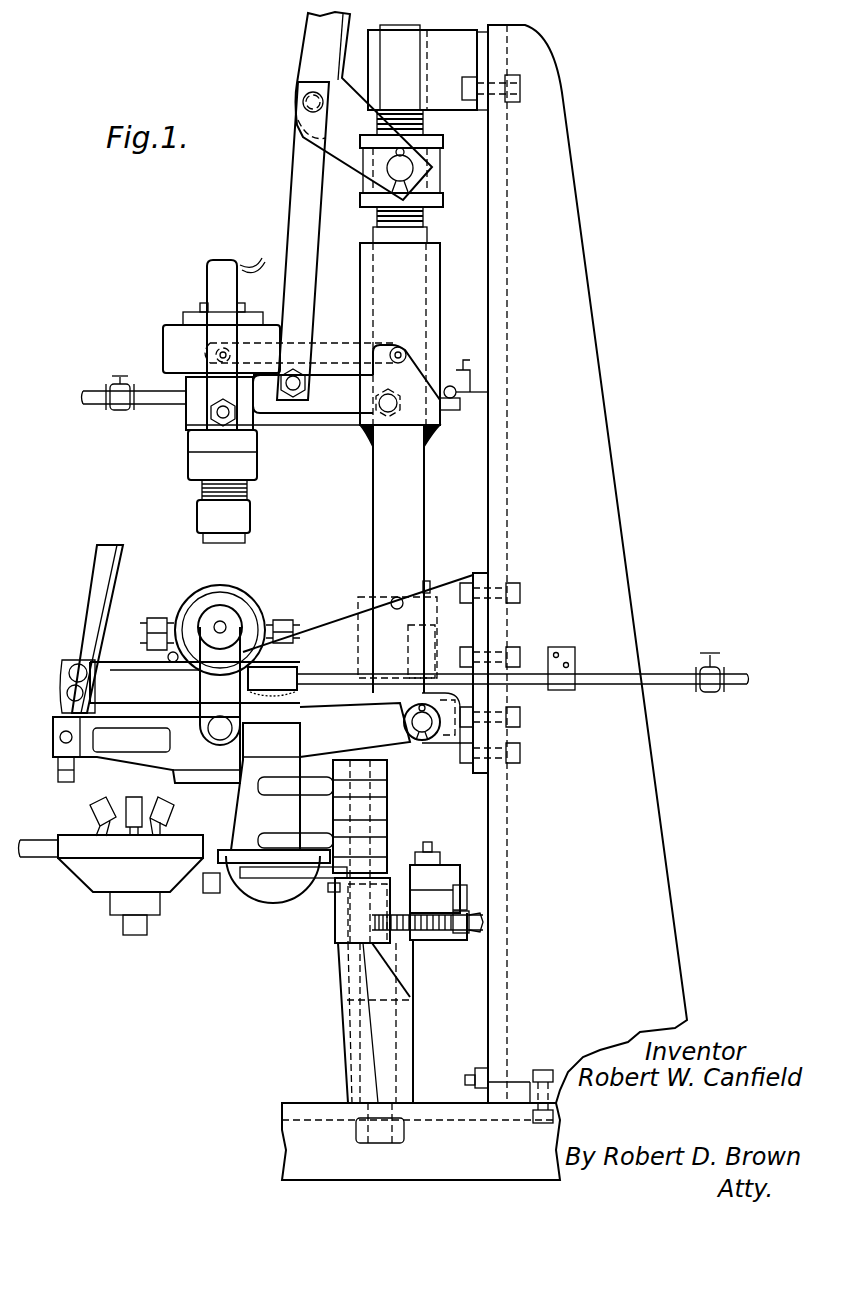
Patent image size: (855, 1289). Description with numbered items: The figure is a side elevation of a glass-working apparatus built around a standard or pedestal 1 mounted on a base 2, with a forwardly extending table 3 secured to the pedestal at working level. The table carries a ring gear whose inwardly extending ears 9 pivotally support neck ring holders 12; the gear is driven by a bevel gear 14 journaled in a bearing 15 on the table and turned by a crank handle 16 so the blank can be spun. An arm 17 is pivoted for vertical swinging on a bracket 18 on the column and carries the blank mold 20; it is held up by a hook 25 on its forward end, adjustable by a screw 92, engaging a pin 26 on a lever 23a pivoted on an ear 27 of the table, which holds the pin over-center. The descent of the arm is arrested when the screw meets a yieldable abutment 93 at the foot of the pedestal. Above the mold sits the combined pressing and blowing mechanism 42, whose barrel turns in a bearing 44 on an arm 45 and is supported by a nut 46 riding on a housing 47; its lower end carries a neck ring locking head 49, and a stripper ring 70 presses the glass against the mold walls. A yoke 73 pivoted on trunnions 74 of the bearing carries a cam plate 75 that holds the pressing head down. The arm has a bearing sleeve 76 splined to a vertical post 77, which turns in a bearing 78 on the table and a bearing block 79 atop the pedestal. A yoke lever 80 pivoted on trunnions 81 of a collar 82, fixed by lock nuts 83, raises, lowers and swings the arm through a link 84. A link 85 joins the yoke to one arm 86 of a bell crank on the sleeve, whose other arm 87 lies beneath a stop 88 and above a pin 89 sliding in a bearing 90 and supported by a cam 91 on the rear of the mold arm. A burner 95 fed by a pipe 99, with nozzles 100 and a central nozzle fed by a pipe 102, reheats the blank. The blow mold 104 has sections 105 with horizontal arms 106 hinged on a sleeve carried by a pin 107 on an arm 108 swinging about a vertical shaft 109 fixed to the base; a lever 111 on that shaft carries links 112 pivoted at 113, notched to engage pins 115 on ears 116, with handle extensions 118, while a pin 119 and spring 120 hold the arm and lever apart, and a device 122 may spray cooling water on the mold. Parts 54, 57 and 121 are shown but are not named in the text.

The standard or pedestal 1 is at (658, 826).
The base 2 is at (430, 1103).
The bracket or table 3 is at (316, 630).
The inwardly extending ears 9 is at (157, 660).
The neck ring holders 12 is at (289, 600).
The bevel gear 14 is at (250, 600).
The bearing 15 is at (228, 615).
The operating crank handle 16 is at (210, 677).
The arm 17 is at (402, 745).
The bracket 18 is at (448, 745).
The blank mold 20 is at (237, 773).
The lever 23a is at (97, 560).
The hook 25 is at (74, 665).
The pin 26 is at (86, 673).
The ear 27 is at (62, 692).
The combined pressing and blowing mechanism 42 is at (217, 428).
The bearing 44 is at (186, 420).
The arm 45 is at (346, 430).
The nut 46 is at (183, 318).
The housing 47 is at (163, 340).
The neck ring locking head 49 is at (188, 468).
The stud 54 is at (199, 305).
The pipe 57 is at (147, 388).
The stripper ring 70 is at (200, 515).
The yoke element 73 is at (210, 262).
The trunnions 74 is at (212, 420).
The cam plate 75 is at (256, 260).
The bearing sleeve 76 is at (440, 283).
The vertical post 77 is at (426, 487).
The bearing 78 is at (358, 623).
The bearing block 79 is at (368, 50).
The yoke lever 80 is at (296, 70).
The trunnions 81 is at (410, 172).
The collar 82 is at (440, 160).
The lock nuts 83 is at (443, 140).
The link 84 is at (290, 180).
The link 85 is at (336, 343).
The arm of bell crank lever 86 is at (405, 364).
The arm of bell crank lever 87 is at (453, 412).
The stop 88 is at (488, 392).
The pin 89 is at (422, 586).
The bearing 90 is at (410, 648).
The cam 91 is at (423, 742).
The screw 92 is at (96, 806).
The yieldable abutment 93 is at (470, 1072).
The burner 95 is at (74, 880).
The pipe 99 is at (45, 838).
The nozzles 100 is at (152, 806).
The pipe 102 is at (123, 925).
The blow mold 104 is at (284, 893).
The sections 105 is at (235, 812).
The horizontal arm 106 is at (300, 815).
The pin 107 is at (376, 808).
The arm 108 is at (337, 928).
The vertical shaft 109 is at (357, 1032).
The lever 111 is at (467, 897).
The links 112 is at (375, 875).
The pivot connection 113 is at (427, 850).
The pins 115 is at (331, 887).
The ears 116 is at (290, 853).
The extensions 118 is at (284, 872).
The pin 119 is at (441, 900).
The spring 120 is at (459, 933).
The bracket 121 is at (471, 935).
The device 122 is at (280, 678).